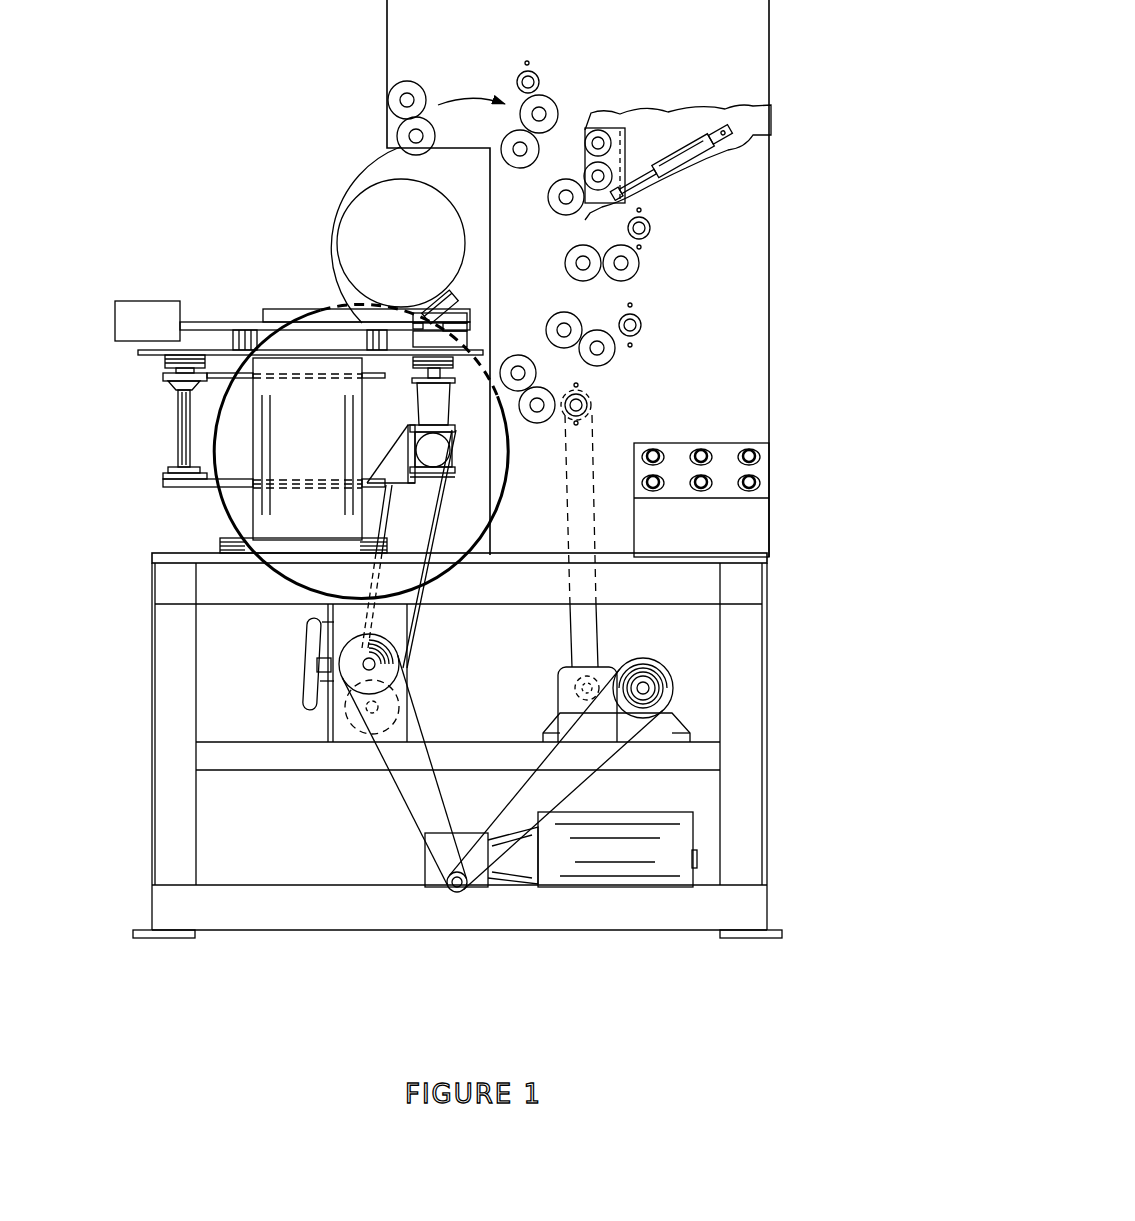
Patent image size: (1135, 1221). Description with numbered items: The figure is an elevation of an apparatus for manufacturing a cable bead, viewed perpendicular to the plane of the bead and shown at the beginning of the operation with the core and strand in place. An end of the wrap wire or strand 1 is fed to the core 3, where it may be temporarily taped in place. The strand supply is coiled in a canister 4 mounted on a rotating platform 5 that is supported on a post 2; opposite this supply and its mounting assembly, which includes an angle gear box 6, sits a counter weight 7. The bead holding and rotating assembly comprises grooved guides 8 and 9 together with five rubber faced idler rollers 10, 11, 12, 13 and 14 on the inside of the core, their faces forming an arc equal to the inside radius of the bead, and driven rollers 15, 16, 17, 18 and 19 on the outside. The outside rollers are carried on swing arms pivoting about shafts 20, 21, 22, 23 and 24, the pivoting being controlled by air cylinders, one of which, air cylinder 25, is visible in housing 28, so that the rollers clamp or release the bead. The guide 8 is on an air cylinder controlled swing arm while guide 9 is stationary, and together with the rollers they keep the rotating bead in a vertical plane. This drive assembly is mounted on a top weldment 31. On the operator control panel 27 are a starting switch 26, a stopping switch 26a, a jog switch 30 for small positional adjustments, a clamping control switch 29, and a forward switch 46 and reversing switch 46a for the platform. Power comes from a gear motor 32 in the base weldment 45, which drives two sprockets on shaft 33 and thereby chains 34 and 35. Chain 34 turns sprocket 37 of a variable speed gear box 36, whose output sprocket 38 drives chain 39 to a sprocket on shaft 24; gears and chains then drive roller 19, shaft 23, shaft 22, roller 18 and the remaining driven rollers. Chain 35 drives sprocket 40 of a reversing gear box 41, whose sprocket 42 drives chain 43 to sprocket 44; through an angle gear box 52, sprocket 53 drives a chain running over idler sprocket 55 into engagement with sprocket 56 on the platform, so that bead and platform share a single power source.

The strand 1 is at (353, 153).
The post 2 is at (267, 397).
The core 3 is at (318, 183).
The canister 4 is at (333, 233).
The rotating platform 5 is at (265, 333).
The angle gear box 6 is at (467, 303).
The counter weight 7 is at (113, 320).
The grooved guide 8 is at (407, 80).
The grooved guide 9 is at (437, 136).
The idler roller 10 is at (512, 177).
The idler roller 11 is at (551, 209).
The idler roller 12 is at (563, 263).
The idler roller 13 is at (546, 317).
The idler roller 14 is at (511, 353).
The driven roller 15 is at (556, 102).
The driven roller 16 is at (625, 162).
The driven roller 17 is at (641, 263).
The driven roller 18 is at (617, 348).
The driven roller 19 is at (537, 426).
The shaft 20 is at (541, 72).
The shaft 21 is at (590, 130).
The shaft 22 is at (655, 228).
The shaft 23 is at (646, 325).
The shaft 24 is at (591, 400).
The air cylinder 25 is at (699, 168).
The starting switch 26 is at (653, 441).
The stopping switch 26a is at (653, 493).
The operator control panel 27 is at (675, 441).
The housing 28 is at (628, 128).
The control switch 29 is at (701, 441).
The jog switch 30 is at (701, 493).
The top weldment 31 is at (772, 23).
The gear motor 32 is at (663, 867).
The shaft 33 is at (457, 894).
The chain 34 is at (595, 783).
The chain 35 is at (393, 793).
The variable speed gear box 36 is at (687, 727).
The sprocket 37 is at (664, 690).
The sprocket 38 is at (572, 690).
The chain 39 is at (603, 632).
The sprocket 40 is at (347, 664).
The reversing gear box 41 is at (347, 622).
The sprocket 42 is at (347, 709).
The chain 43 is at (424, 625).
The sprocket 44 is at (457, 462).
The base weldment 45 is at (769, 765).
The forward switch 46 is at (764, 455).
The reversing switch 46a is at (764, 483).
The angle gear box 52 is at (410, 415).
The sprocket 53 is at (410, 350).
The idler sprocket 55 is at (140, 357).
The sprocket 56 is at (203, 378).